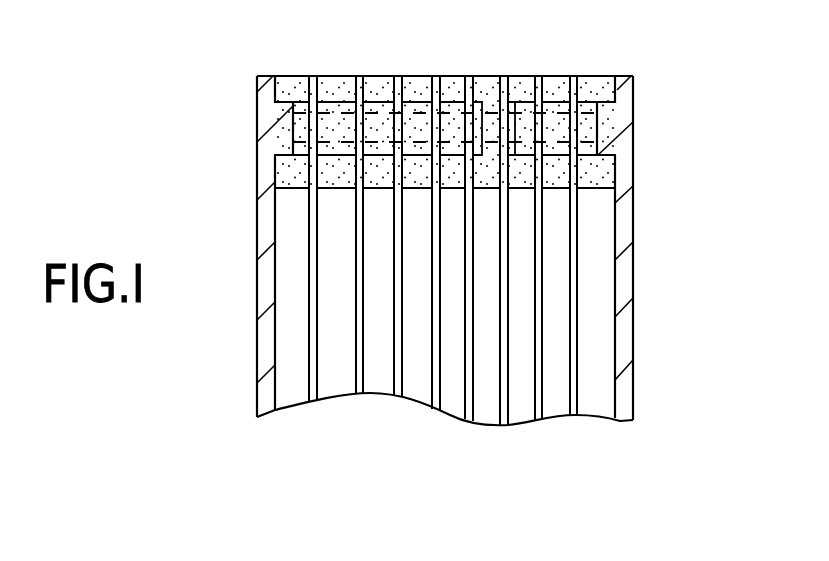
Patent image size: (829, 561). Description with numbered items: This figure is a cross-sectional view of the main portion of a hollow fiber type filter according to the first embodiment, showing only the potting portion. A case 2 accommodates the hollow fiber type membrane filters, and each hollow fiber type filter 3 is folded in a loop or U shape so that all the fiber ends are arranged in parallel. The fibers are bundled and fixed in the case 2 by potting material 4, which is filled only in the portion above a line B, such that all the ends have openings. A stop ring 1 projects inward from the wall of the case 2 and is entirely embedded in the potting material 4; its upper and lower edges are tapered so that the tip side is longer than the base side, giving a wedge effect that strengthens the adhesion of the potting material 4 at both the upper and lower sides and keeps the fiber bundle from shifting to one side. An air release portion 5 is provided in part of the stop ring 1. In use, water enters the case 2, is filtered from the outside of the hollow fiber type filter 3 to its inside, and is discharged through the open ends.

The stop ring 1 is at (614, 107).
The case 2 is at (632, 292).
The hollow fiber type filter 3 is at (575, 382).
The potting material 4 is at (595, 83).
The air release portion 5 is at (490, 118).
The line B is at (597, 188).